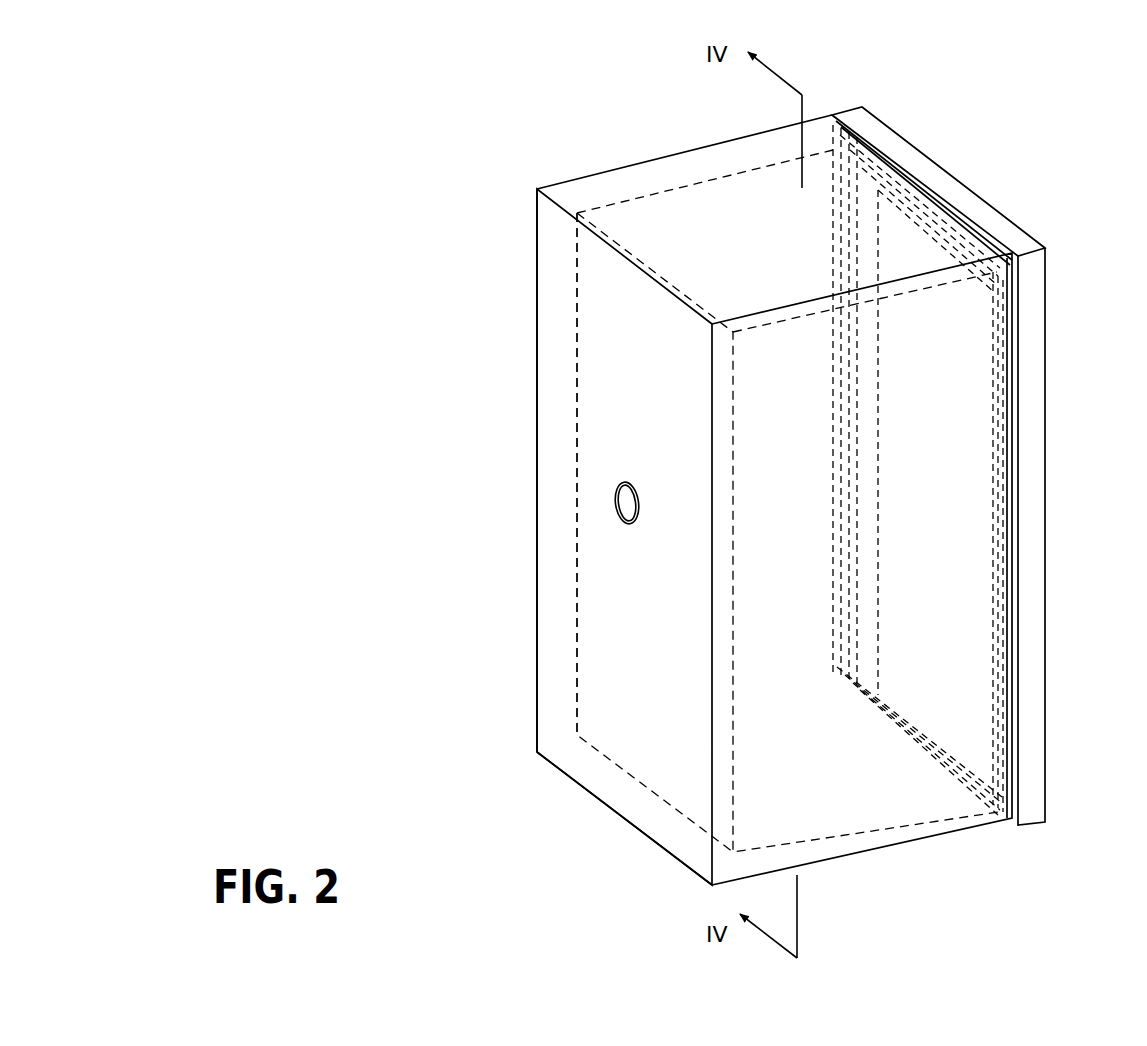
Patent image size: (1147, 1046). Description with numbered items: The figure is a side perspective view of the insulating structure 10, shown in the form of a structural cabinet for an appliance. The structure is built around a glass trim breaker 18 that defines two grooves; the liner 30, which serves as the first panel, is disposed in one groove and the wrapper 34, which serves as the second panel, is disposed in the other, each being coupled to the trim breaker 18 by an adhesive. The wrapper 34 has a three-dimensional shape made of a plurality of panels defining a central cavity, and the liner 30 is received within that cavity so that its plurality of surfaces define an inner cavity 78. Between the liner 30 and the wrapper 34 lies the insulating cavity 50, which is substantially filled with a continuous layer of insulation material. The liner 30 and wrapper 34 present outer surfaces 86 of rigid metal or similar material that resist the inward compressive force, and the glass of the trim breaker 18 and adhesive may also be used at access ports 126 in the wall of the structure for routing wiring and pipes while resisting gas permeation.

The insulating structure 10 is at (550, 124).
The trim breaker 18 is at (935, 180).
The liner 30 is at (608, 460).
The wrapper 34 is at (553, 382).
The insulating cavity 50 is at (606, 780).
The inner cavity 78 is at (950, 488).
The outer surfaces 86 is at (676, 173).
The access ports 126 is at (613, 512).